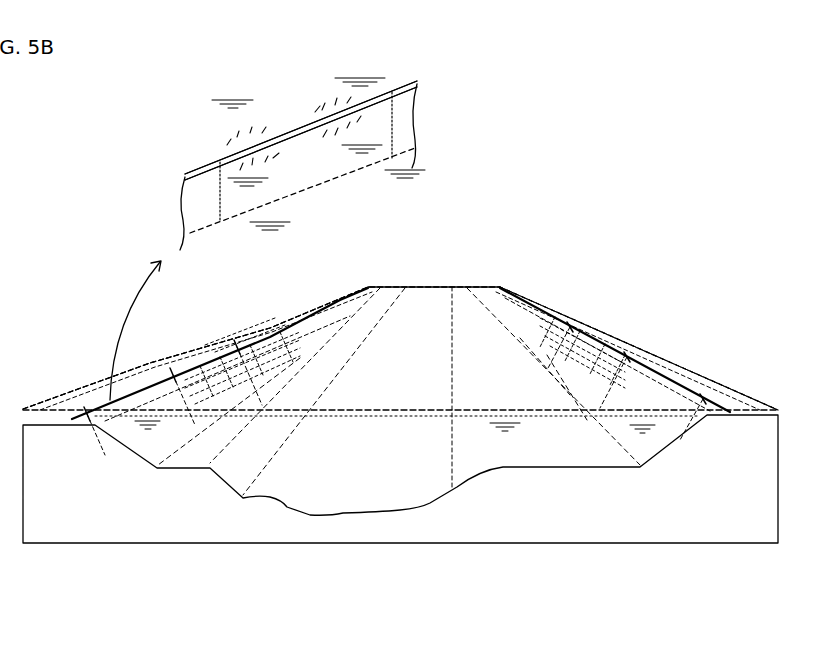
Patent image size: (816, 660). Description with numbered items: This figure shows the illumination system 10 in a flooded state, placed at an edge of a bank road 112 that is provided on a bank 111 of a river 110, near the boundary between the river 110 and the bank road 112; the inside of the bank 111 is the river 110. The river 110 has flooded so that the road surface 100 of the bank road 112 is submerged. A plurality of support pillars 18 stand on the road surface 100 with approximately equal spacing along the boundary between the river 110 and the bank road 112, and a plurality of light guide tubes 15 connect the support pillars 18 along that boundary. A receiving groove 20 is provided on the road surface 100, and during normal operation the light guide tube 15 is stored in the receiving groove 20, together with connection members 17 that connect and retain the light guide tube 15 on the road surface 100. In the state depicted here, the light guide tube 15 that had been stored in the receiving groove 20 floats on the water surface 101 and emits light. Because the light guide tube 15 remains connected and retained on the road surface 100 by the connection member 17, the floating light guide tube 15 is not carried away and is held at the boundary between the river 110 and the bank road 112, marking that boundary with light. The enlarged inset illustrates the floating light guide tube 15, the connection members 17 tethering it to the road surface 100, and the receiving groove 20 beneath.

The illumination system 10 is at (282, 318).
The light guide tube 15 is at (138, 390).
The connection member 17 is at (186, 177).
The support pillar 18 is at (87, 415).
The receiving groove 20 is at (350, 172).
The road surface 100 is at (293, 170).
The water surface 101 is at (402, 369).
The river 110 is at (433, 287).
The bank 111 is at (70, 530).
The bank road 112 is at (52, 420).